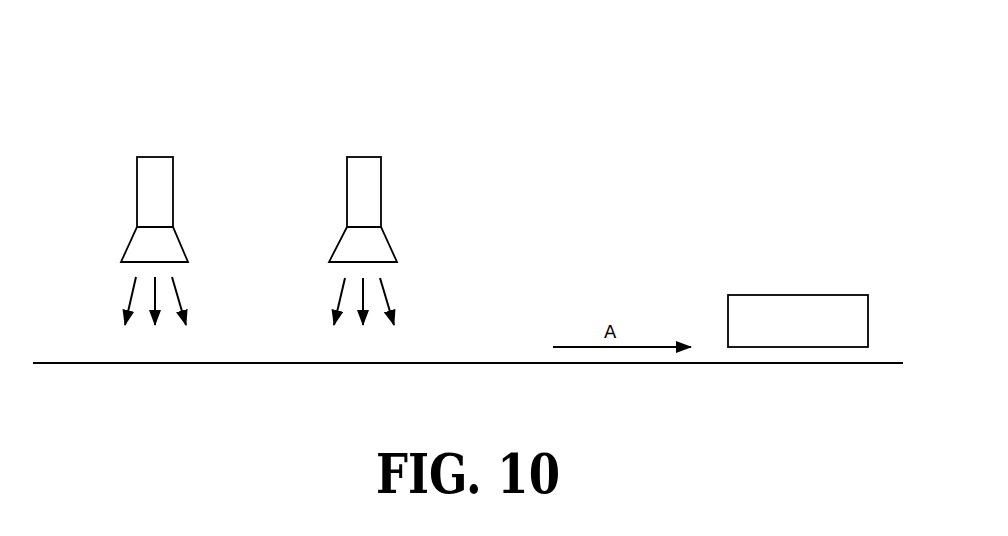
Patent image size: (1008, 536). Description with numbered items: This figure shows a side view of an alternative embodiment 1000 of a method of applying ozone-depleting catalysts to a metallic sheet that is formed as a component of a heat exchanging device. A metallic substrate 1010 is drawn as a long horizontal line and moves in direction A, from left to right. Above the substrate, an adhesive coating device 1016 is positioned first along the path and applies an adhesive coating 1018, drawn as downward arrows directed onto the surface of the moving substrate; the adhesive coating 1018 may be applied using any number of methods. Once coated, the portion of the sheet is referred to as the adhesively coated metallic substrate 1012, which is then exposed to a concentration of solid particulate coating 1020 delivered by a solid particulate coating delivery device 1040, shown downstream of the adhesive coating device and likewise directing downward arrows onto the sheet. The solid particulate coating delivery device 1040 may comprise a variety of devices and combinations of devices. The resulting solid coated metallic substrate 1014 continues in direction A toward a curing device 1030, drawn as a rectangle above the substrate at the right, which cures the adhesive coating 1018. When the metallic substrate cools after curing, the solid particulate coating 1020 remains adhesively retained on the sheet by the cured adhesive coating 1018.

The system 1000 is at (236, 52).
The metallic substrate 1010 is at (65, 364).
The adhesively coated metallic substrate 1012 is at (225, 363).
The solid coated metallic substrate 1014 is at (441, 363).
The adhesive coating device 1016 is at (156, 157).
The adhesive coating 1018 is at (178, 295).
The solid particulate coating delivery device 1040 is at (362, 157).
The solid particulate coating 1020 is at (386, 295).
The curing device 1030 is at (797, 295).